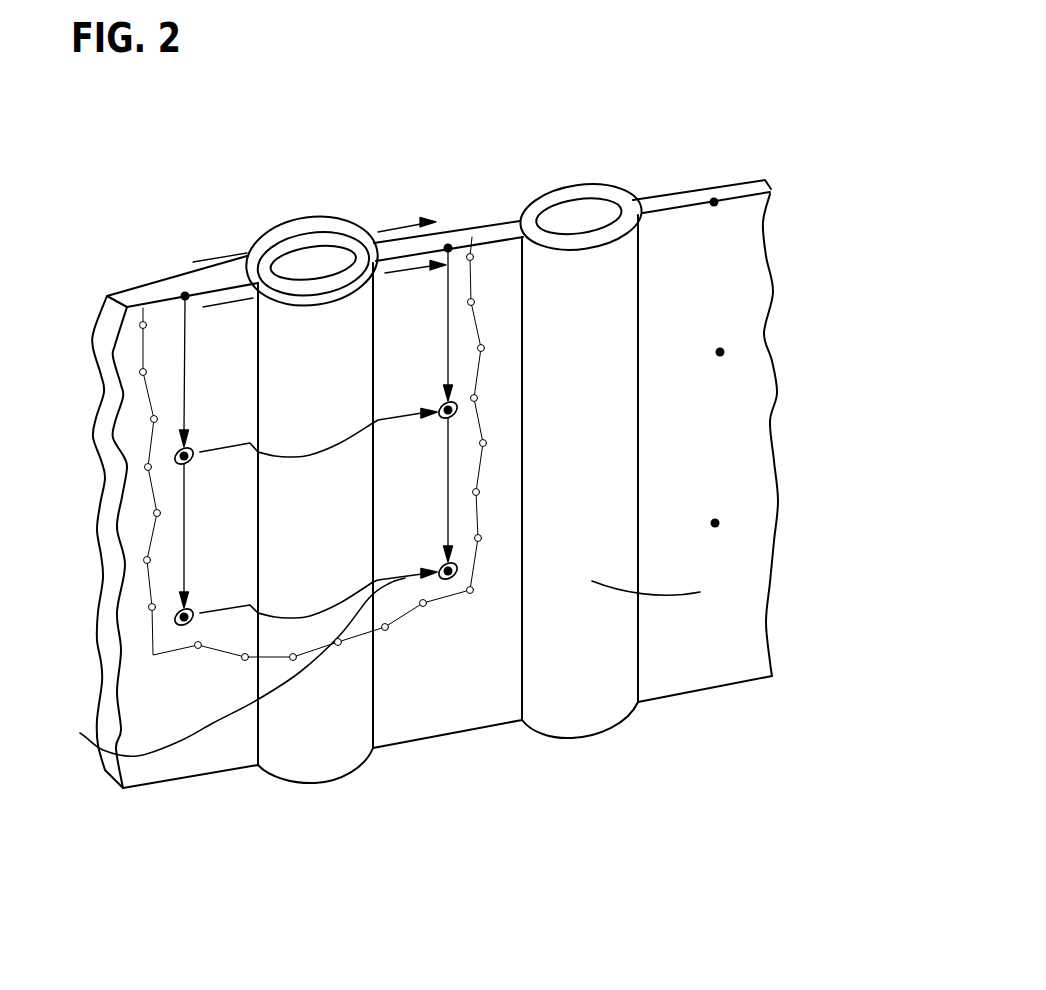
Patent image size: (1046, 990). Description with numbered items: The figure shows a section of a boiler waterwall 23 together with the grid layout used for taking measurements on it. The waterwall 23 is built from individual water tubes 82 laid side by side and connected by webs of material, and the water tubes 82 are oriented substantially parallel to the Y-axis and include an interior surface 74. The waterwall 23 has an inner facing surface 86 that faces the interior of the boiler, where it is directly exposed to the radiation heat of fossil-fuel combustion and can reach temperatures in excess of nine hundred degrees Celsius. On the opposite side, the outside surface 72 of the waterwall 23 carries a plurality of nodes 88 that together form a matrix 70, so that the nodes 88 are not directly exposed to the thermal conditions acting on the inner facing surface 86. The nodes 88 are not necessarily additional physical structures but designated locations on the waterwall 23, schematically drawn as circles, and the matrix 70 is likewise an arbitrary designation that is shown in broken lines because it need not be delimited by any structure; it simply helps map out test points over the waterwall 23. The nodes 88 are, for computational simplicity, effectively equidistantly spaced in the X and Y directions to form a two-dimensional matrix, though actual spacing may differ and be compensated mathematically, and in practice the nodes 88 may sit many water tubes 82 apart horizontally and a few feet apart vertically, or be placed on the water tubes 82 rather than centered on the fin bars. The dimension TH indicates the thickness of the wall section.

The waterwall 23 is at (798, 426).
The matrix 70 is at (80, 733).
The outside surface 72 is at (133, 767).
The interior surface 74 is at (567, 220).
The water tubes 82 is at (316, 800).
The inner facing surface 86 is at (700, 592).
The nodes 88 is at (185, 296).
The thickness TH is at (833, 213).
The X direction X is at (782, 352).
The Y-axis Y is at (448, 785).